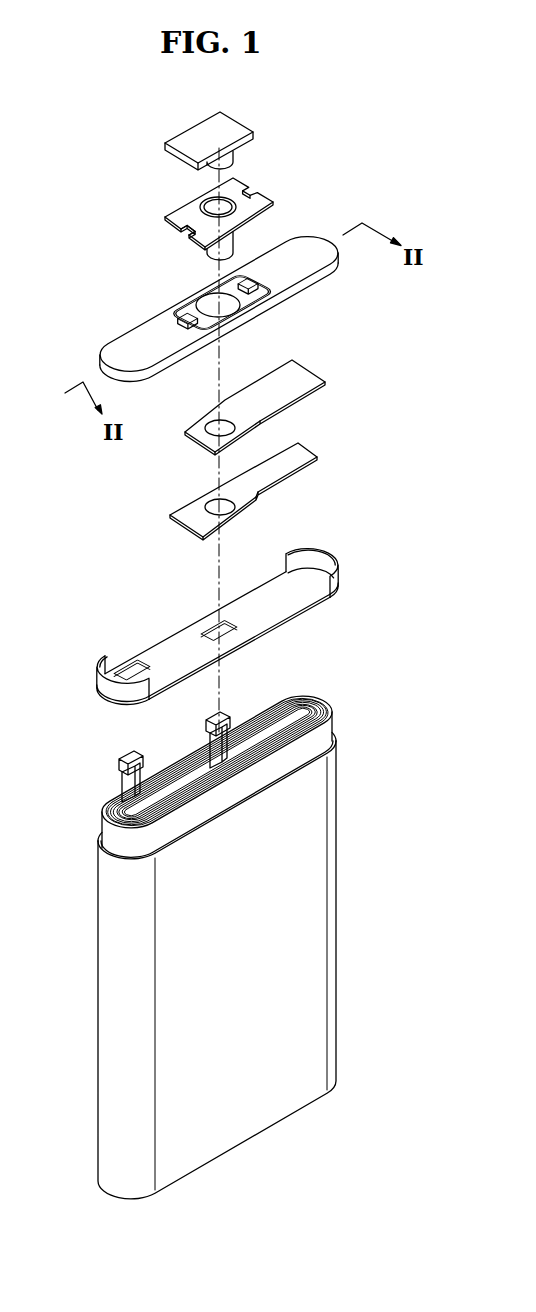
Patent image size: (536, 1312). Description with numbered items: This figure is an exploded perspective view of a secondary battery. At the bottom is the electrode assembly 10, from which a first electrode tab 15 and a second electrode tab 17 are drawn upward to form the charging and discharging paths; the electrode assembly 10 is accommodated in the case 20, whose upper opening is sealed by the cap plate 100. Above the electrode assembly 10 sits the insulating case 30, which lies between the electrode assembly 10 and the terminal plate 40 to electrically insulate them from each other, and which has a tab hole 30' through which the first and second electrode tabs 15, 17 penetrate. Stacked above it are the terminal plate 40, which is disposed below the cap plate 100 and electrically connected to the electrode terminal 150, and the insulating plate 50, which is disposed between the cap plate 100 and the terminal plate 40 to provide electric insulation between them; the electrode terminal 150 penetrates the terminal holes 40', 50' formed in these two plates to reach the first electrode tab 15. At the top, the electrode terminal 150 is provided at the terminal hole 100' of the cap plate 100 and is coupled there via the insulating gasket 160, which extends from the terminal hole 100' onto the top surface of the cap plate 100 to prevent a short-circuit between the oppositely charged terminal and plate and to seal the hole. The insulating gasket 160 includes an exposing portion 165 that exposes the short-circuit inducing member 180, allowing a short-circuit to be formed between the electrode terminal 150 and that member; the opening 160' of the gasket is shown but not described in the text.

The electrode assembly 10 is at (327, 703).
The first electrode tab 15 is at (233, 712).
The second electrode tab 17 is at (128, 750).
The case 20 is at (317, 915).
The insulating case 30 is at (260, 624).
The tab hole 30' is at (149, 624).
The terminal plate 40 is at (271, 470).
The terminal hole 40' is at (187, 485).
The insulating plate 50 is at (276, 387).
The terminal hole 50' is at (182, 415).
The cap plate 100 is at (232, 278).
The terminal hole 100' is at (184, 287).
The electrode terminal 150 is at (194, 133).
The insulating gasket 160 is at (240, 200).
The opening of terminal plate 160' is at (178, 187).
The exposing portion 165 is at (187, 232).
The short-circuit inducing member 180 is at (170, 317).